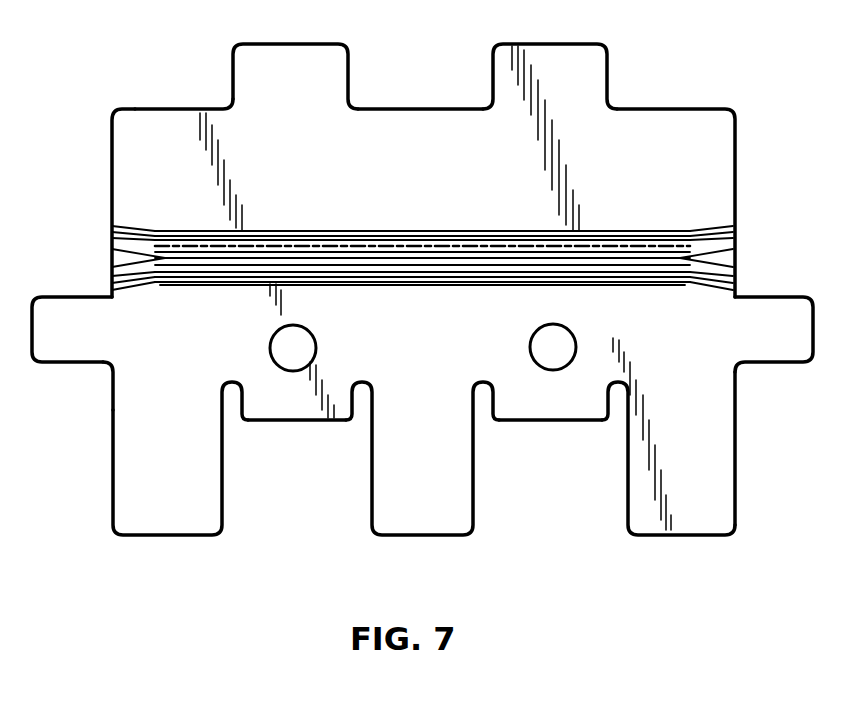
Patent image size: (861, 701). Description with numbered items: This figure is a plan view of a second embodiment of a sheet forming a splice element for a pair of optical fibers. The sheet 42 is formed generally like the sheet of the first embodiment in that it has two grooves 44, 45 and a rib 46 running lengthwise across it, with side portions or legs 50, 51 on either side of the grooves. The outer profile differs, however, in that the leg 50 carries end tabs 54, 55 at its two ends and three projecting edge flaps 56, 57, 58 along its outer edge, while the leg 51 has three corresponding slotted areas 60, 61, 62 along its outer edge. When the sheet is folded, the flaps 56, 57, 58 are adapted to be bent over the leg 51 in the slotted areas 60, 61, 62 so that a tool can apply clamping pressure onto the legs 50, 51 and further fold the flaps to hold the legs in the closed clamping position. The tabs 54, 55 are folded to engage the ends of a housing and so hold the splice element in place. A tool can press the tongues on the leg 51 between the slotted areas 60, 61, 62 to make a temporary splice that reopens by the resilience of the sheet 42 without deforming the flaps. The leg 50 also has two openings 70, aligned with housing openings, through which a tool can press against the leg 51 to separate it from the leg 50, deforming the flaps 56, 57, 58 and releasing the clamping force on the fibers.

The sheet 42 is at (108, 119).
The groove 44 is at (480, 243).
The groove 45 is at (492, 283).
The rib 46 is at (390, 258).
The leg 50 is at (124, 388).
The leg 51 is at (125, 162).
The end tab 54 is at (48, 362).
The end tab 55 is at (798, 365).
The projecting edge flap 56 is at (165, 522).
The projecting edge flap 57 is at (452, 528).
The projecting edge flap 58 is at (690, 520).
The slotted area 60 is at (152, 108).
The slotted area 61 is at (406, 108).
The slotted area 62 is at (630, 108).
The opening 70 is at (279, 338).